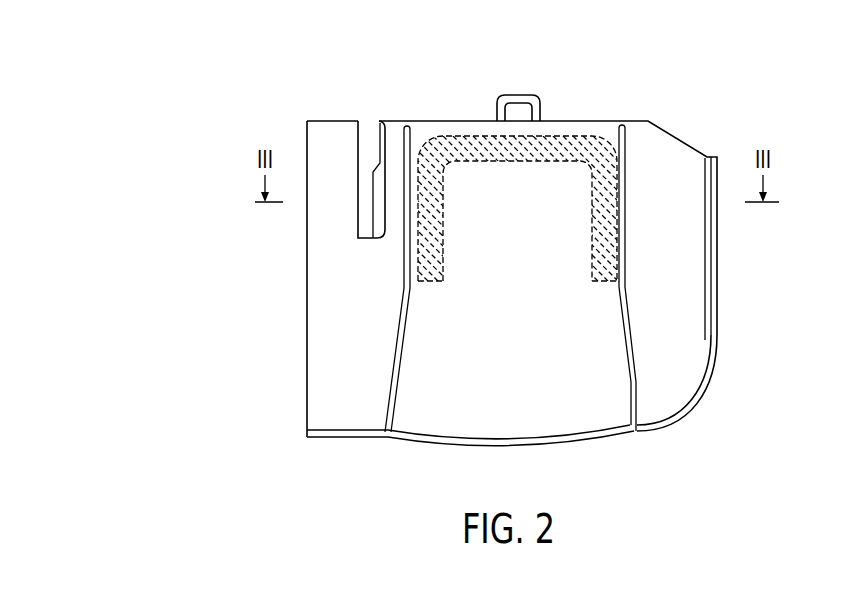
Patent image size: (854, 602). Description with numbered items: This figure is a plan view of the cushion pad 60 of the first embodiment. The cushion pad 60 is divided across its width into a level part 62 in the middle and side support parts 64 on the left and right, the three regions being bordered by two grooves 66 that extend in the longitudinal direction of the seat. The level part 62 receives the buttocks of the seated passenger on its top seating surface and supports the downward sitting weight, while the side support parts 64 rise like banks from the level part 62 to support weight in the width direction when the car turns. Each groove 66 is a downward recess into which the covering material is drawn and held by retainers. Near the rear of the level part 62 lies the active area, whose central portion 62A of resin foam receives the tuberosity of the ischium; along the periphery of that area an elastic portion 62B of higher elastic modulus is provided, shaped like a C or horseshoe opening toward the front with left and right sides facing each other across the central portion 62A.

The cushion pad 60 is at (341, 85).
The level part 62 is at (530, 373).
The central portion 62A is at (517, 210).
The elastic portion 62B is at (433, 172).
The side support part 64 is at (375, 328).
The groove 66 is at (400, 380).